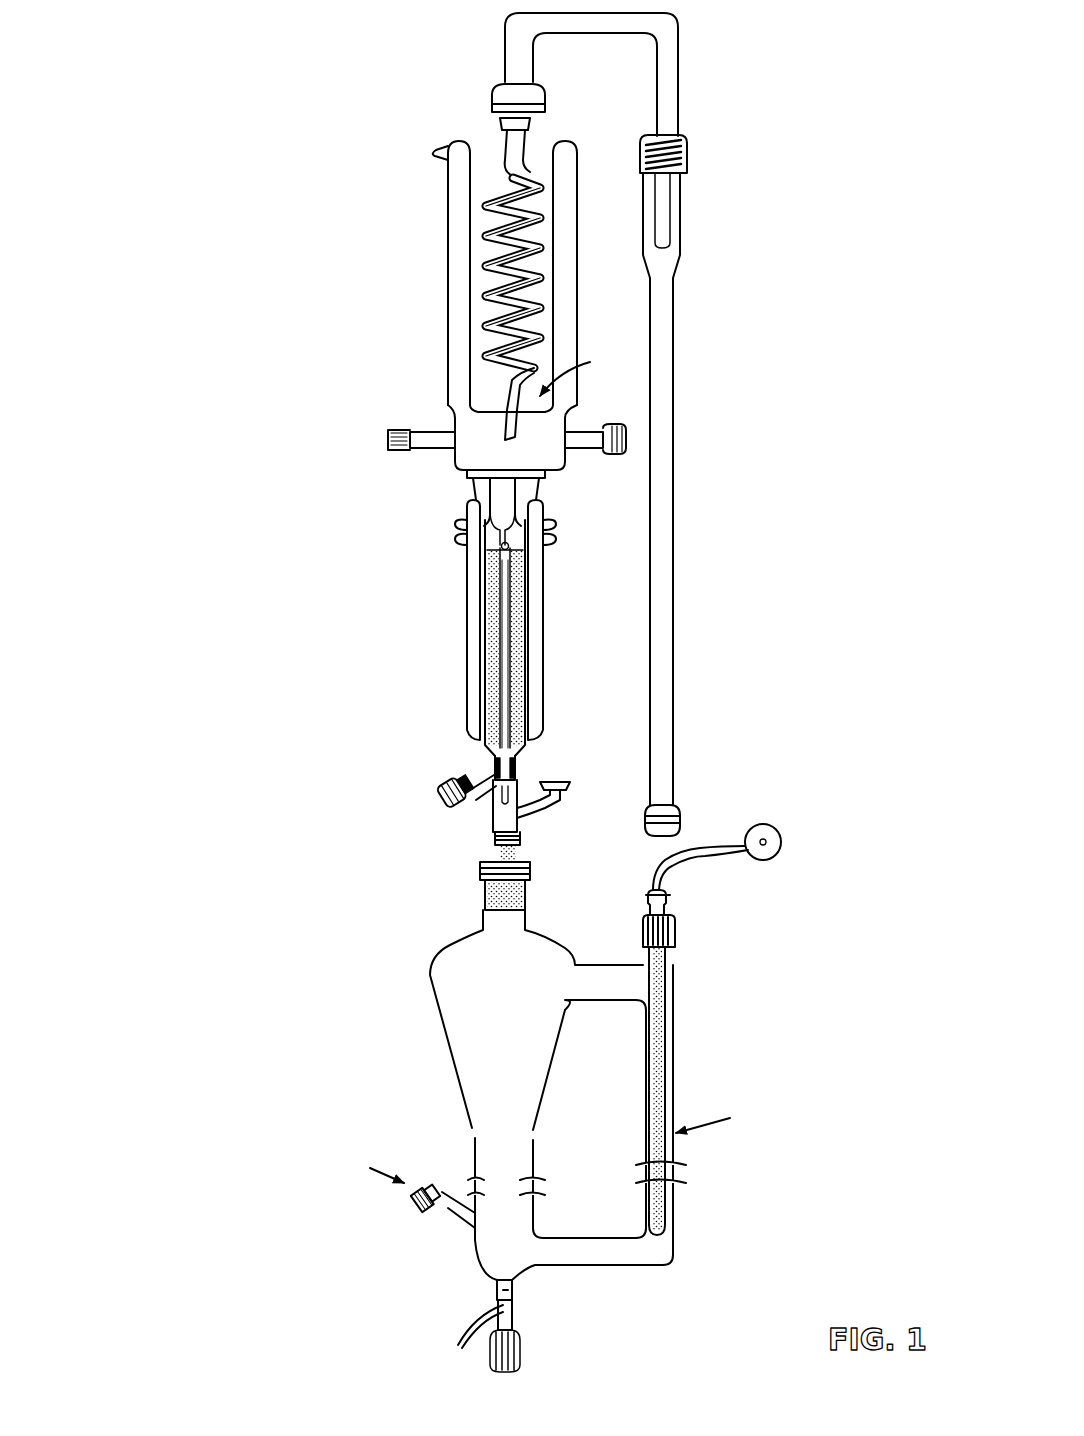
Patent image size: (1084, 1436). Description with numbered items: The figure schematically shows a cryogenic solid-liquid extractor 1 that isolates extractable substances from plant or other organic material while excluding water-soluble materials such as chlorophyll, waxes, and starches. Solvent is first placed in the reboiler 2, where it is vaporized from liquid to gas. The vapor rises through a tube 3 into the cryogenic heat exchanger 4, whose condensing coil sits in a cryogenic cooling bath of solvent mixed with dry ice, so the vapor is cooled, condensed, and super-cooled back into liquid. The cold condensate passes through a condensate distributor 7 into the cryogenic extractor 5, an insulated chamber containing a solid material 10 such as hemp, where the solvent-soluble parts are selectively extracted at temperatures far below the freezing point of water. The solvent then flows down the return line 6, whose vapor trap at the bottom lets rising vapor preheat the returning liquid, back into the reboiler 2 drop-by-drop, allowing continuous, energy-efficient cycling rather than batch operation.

The cryogenic solid-liquid extractor 1 is at (130, 28).
The reboiler 2 is at (440, 944).
The tube 3 is at (685, 90).
The cryogenic heat exchanger 4 is at (488, 216).
The cryogenic extractor 5 is at (478, 572).
The return line 6 is at (520, 592).
The condensate distributor 7 is at (498, 506).
The solid material 10 is at (528, 690).